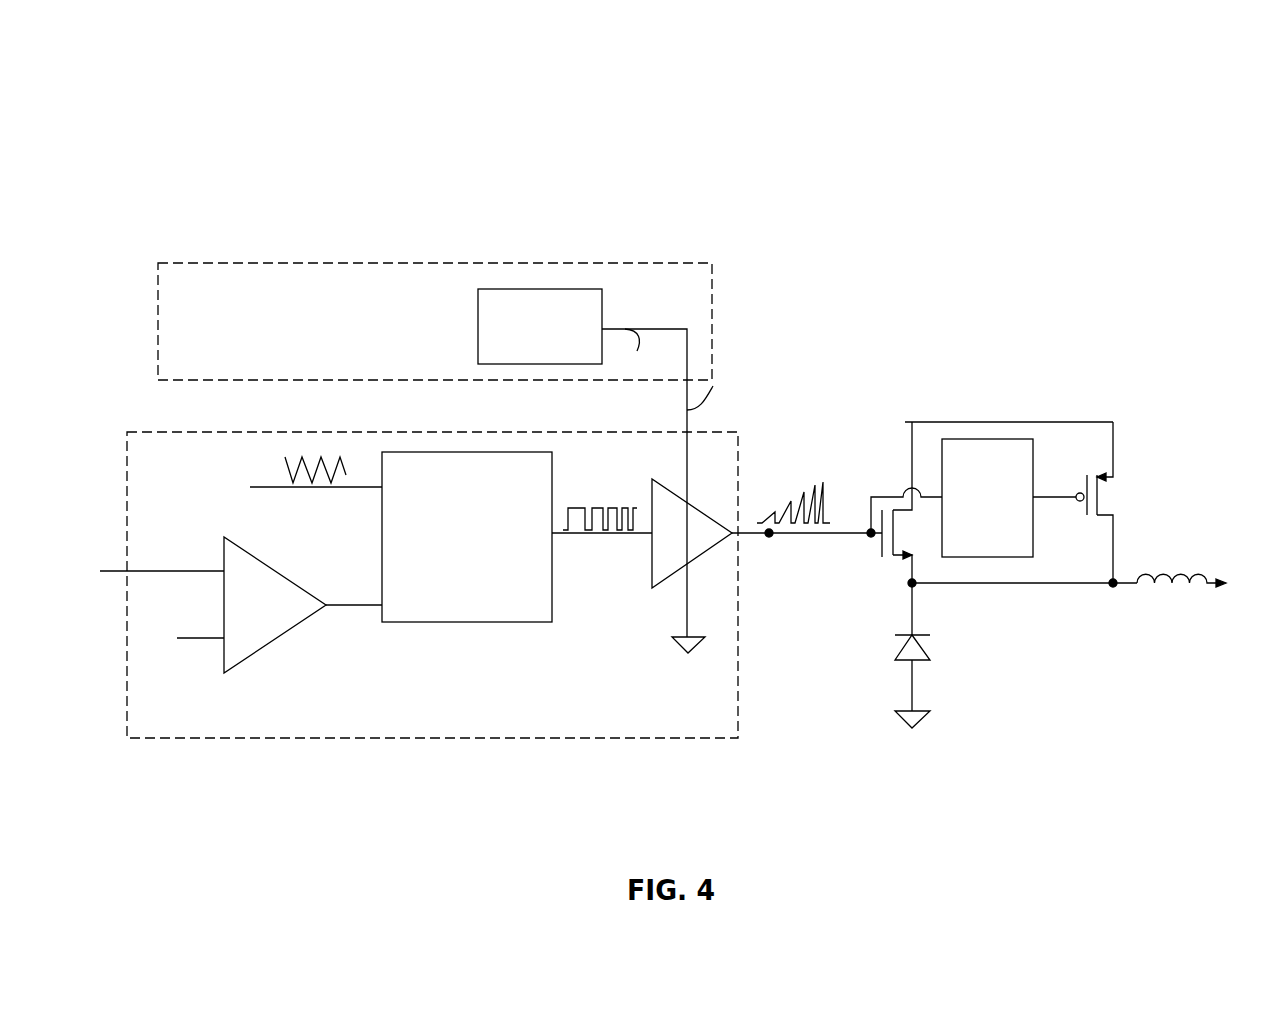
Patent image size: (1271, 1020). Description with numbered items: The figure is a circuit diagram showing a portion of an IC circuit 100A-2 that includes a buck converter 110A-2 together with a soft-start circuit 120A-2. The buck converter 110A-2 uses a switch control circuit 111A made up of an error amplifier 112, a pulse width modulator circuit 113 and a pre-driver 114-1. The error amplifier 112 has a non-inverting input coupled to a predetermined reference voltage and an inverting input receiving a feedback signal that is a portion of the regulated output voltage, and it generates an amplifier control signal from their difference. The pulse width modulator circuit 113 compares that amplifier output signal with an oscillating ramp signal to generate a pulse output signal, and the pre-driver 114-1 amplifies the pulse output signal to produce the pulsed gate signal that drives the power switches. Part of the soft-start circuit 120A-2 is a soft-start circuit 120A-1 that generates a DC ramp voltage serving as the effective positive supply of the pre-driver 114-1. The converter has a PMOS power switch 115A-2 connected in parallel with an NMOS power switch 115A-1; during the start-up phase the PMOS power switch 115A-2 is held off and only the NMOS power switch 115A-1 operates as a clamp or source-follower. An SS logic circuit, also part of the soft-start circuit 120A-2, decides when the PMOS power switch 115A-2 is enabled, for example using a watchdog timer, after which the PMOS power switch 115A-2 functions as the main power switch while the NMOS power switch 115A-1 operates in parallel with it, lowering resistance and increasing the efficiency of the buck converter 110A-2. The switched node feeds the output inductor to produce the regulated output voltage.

The IC circuit 100A-2 is at (1046, 100).
The buck converter 110A-2 is at (1086, 369).
The switch control circuit 111A is at (396, 585).
The error amplifier 112 is at (213, 605).
The pulse width modulator circuit 113 is at (467, 537).
The pre-driver 114-1 is at (692, 533).
The NMOS power switch 115A-1 is at (878, 548).
The PMOS power switch 115A-2 is at (1086, 515).
The soft-start circuit 120A-1 is at (540, 326).
The soft-start circuit / SS logic circuit 120A-2 is at (595, 410).